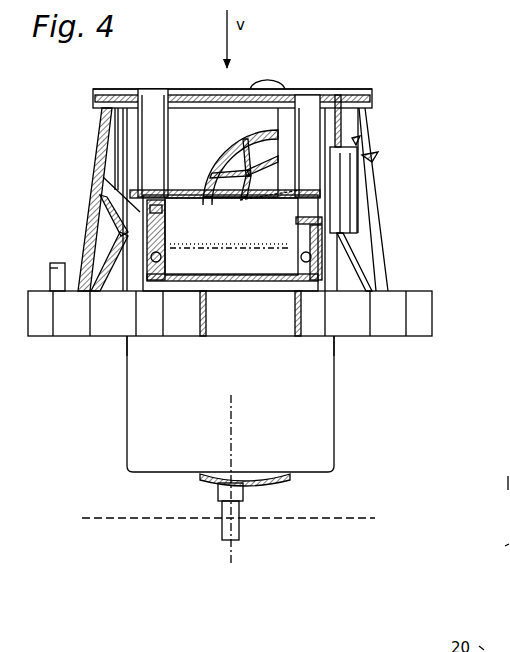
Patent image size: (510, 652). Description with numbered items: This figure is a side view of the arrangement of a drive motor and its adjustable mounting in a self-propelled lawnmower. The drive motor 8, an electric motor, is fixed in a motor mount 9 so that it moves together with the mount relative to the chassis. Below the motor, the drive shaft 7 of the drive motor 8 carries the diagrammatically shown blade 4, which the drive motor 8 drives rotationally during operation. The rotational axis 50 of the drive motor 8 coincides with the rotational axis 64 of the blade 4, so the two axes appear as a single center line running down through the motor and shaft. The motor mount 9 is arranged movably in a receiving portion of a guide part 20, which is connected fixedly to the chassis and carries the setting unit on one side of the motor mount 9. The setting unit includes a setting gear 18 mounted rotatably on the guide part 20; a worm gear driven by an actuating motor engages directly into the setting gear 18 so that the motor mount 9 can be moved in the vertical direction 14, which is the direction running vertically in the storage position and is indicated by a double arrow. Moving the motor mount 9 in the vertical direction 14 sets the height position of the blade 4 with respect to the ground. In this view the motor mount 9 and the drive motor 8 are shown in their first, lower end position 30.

The vertical direction 14 is at (165, 30).
The setting gear 18 is at (275, 130).
The motor mount 9 is at (262, 214).
The guide part 20 is at (347, 237).
The drive motor 8 is at (316, 404).
The first, lower end position 30 is at (334, 438).
The drive shaft 7 is at (246, 497).
The rotational axis of the drive motor 50 is at (231, 565).
The rotational axis of the blade 64 is at (232, 566).
The blade 4 is at (120, 518).